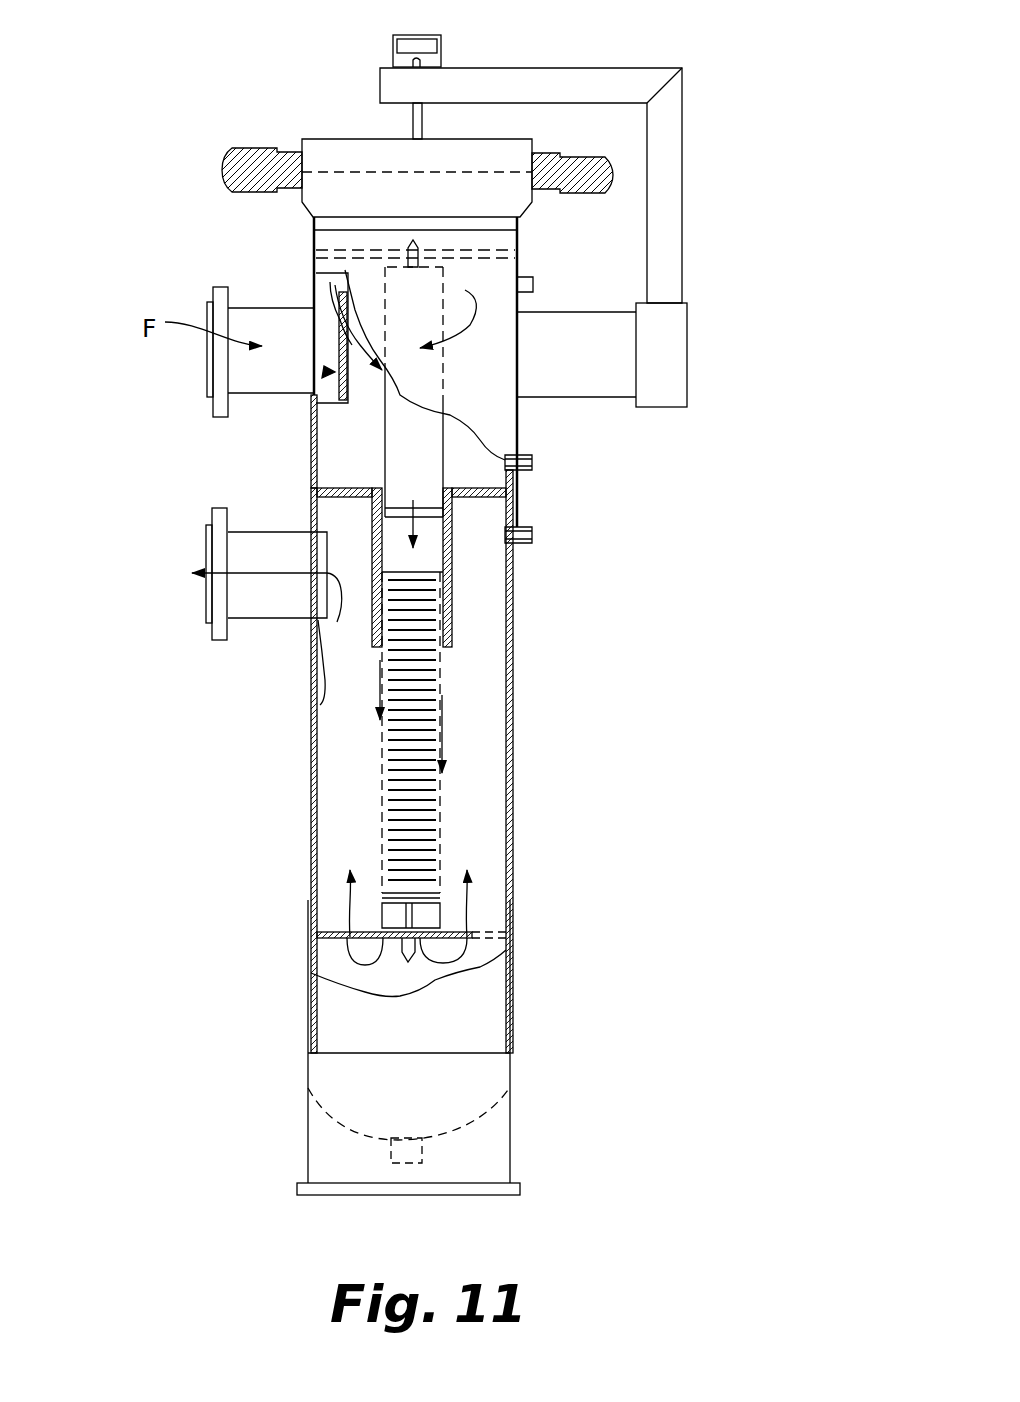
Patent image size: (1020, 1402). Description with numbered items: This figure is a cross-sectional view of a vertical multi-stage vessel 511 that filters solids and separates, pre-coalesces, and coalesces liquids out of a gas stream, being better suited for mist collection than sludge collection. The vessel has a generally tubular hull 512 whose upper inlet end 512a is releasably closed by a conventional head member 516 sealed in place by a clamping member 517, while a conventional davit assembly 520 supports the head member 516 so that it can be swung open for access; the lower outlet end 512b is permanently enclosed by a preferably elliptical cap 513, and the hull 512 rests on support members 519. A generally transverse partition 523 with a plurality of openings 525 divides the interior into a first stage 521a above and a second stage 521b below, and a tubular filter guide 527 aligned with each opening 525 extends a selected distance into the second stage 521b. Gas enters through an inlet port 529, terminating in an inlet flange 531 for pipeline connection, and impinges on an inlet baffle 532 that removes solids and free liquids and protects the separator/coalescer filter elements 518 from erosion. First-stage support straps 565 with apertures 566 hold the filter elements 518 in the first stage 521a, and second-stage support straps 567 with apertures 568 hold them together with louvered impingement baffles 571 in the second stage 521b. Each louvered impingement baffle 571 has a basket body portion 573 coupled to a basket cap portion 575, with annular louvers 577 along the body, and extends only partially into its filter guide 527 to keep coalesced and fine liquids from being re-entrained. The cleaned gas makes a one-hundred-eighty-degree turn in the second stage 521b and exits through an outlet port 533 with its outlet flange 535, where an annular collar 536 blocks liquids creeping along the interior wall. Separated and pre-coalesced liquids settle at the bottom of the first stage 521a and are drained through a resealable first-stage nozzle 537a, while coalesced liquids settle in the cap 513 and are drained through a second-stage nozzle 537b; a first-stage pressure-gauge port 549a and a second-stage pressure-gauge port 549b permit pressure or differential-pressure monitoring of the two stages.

The vertical multi-stage vessel 511 is at (320, 64).
The davit assembly 520 is at (705, 108).
The head member 516 is at (330, 139).
The clamping member 517 is at (237, 148).
The hull 512 is at (550, 666).
The upper inlet end 512a is at (298, 230).
The first-stage support straps 565 is at (505, 248).
The apertures 566 is at (404, 246).
The first-stage pressure-gauge port 549a is at (528, 277).
The separator/coalescer filter elements 518 is at (452, 432).
The inlet port 529 is at (244, 308).
The inlet flange 531 is at (218, 417).
The inlet baffle 532 is at (322, 363).
The openings 525 is at (376, 470).
The first stage 521a is at (343, 462).
The first-stage nozzle 537a is at (534, 456).
The partition 523 is at (495, 492).
The second-stage pressure-gauge port 549b is at (534, 527).
The filter guide 527 is at (455, 600).
The outlet port 533 is at (300, 618).
The outlet flange 535 is at (218, 641).
The annular collar 536 is at (318, 690).
The second stage 521b is at (482, 800).
The annular louvers 577 is at (425, 735).
The louvered impingement baffles 571 is at (436, 740).
The basket body portion 573 is at (378, 768).
The basket cap portion 575 is at (444, 912).
The second-stage support straps 567 is at (320, 926).
The apertures 568 is at (422, 950).
The lower outlet end 512b is at (292, 1076).
The cap 513 is at (492, 1108).
The second-stage nozzle 537b is at (423, 1162).
The support members 519 is at (308, 1153).